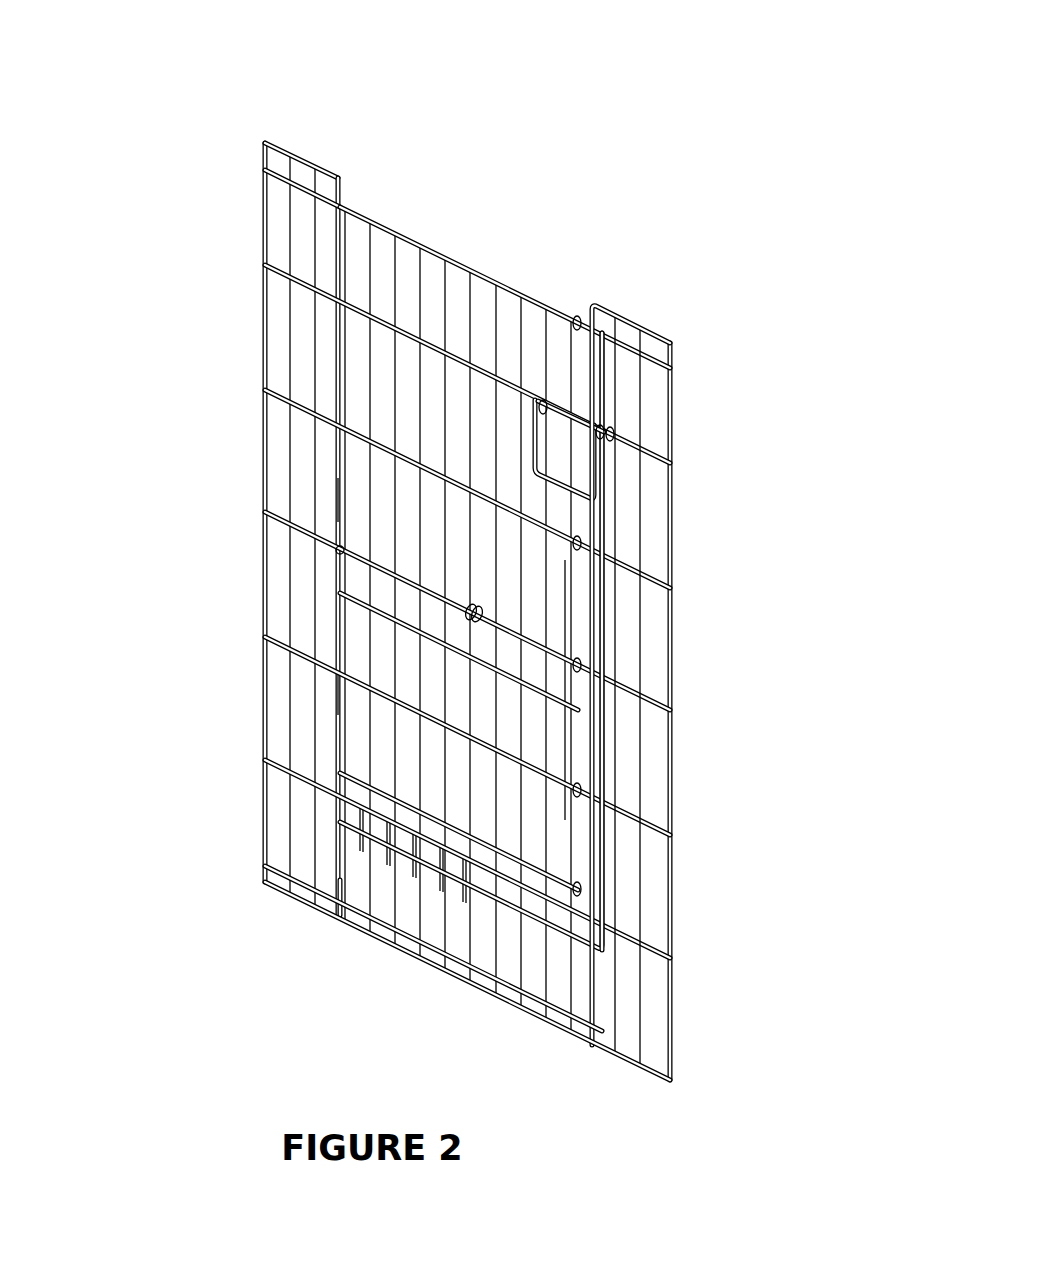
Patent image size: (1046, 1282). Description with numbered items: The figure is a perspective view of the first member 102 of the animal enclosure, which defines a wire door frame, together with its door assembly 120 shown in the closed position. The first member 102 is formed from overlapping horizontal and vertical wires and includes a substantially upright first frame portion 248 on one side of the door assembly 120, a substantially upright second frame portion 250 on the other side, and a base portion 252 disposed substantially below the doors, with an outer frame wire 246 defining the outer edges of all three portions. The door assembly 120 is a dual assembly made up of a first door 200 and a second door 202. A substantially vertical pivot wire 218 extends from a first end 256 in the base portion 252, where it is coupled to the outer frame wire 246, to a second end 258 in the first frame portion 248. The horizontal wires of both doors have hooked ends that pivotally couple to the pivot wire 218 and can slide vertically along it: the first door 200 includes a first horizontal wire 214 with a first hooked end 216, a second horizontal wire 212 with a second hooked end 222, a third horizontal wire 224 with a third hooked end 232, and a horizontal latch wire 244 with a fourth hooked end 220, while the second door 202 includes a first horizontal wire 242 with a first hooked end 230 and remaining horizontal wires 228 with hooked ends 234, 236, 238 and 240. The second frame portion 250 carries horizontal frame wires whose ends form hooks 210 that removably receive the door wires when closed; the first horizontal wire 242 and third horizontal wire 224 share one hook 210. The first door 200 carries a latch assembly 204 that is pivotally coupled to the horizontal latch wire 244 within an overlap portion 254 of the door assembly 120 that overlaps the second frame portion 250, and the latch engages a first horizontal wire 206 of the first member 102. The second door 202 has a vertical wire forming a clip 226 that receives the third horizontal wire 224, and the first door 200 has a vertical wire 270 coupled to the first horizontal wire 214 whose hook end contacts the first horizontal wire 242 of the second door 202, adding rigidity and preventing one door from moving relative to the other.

The first member 102 is at (203, 112).
The door assembly 120 is at (465, 245).
The first door 200 is at (395, 375).
The second door 202 is at (375, 730).
The latch assembly 204 is at (540, 398).
The first horizontal wire 206 is at (650, 452).
The hooks 210 is at (578, 318).
The second horizontal wire 212 is at (560, 575).
The first horizontal wire 214 is at (392, 220).
The first hooked end 216 is at (342, 203).
The pivot wire 218 is at (340, 895).
The fourth hooked end 220 is at (338, 296).
The second hooked end 222 is at (340, 423).
The third horizontal wire 224 is at (352, 525).
The clip 226 is at (482, 628).
The horizontal wires 228 is at (352, 617).
The first hooked end 230 is at (343, 552).
The third hooked end 232 is at (310, 550).
The hooked end 234 is at (345, 597).
The hooked end 236 is at (340, 697).
The hooked end 238 is at (338, 778).
The hooked end 240 is at (338, 822).
The first horizontal wire 242 is at (350, 570).
The horizontal latch wire 244 is at (580, 425).
The outer frame wire 246 is at (265, 330).
The first frame portion 248 is at (292, 138).
The second frame portion 250 is at (668, 321).
The base portion 252 is at (466, 994).
The overlap portion 254 is at (604, 323).
The first end 256 is at (340, 880).
The second end 258 is at (344, 180).
The vertical wire 270 is at (565, 620).